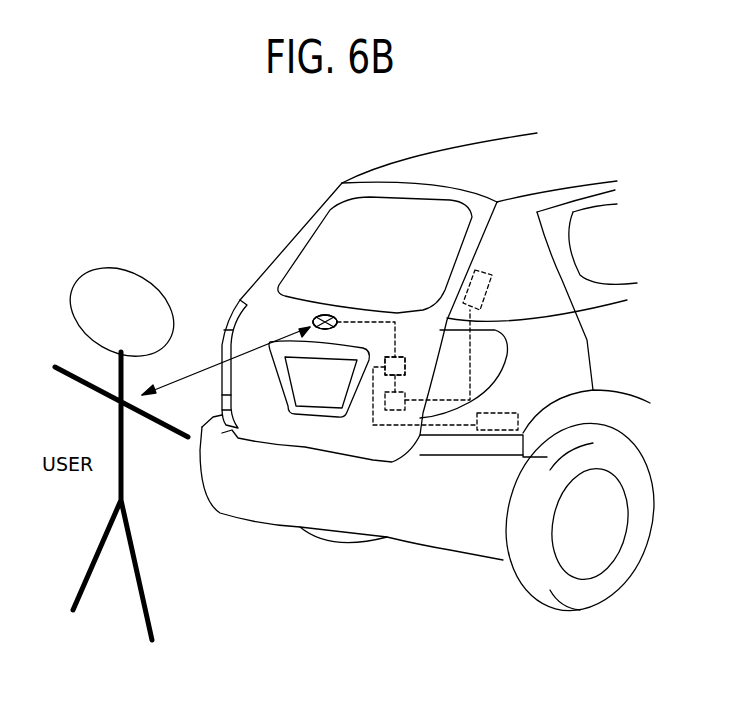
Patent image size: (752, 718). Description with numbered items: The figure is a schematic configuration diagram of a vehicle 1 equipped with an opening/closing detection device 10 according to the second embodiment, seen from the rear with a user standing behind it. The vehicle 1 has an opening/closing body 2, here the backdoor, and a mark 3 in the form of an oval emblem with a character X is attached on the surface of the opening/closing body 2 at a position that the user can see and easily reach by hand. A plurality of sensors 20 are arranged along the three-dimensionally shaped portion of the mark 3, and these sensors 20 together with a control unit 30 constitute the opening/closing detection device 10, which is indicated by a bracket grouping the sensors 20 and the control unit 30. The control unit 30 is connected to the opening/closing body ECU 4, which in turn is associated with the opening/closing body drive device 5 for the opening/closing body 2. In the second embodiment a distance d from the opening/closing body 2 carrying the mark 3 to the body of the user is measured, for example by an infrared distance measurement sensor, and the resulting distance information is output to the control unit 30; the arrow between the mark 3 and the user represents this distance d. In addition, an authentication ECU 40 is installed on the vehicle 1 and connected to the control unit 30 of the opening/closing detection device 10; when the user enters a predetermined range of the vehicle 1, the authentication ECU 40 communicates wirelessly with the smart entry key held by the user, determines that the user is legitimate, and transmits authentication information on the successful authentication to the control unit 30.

The vehicle 1 is at (665, 231).
The opening/closing body 2 is at (268, 280).
The mark 3 is at (312, 322).
The opening/closing body electronic control unit (ECU) 4 is at (388, 415).
The opening/closing body drive device 5 is at (493, 295).
The opening/closing detection device 10 is at (393, 240).
The sensors 20 is at (334, 310).
The control unit 30 is at (400, 357).
The authentication ECU 40 is at (508, 412).
The distance d is at (203, 367).